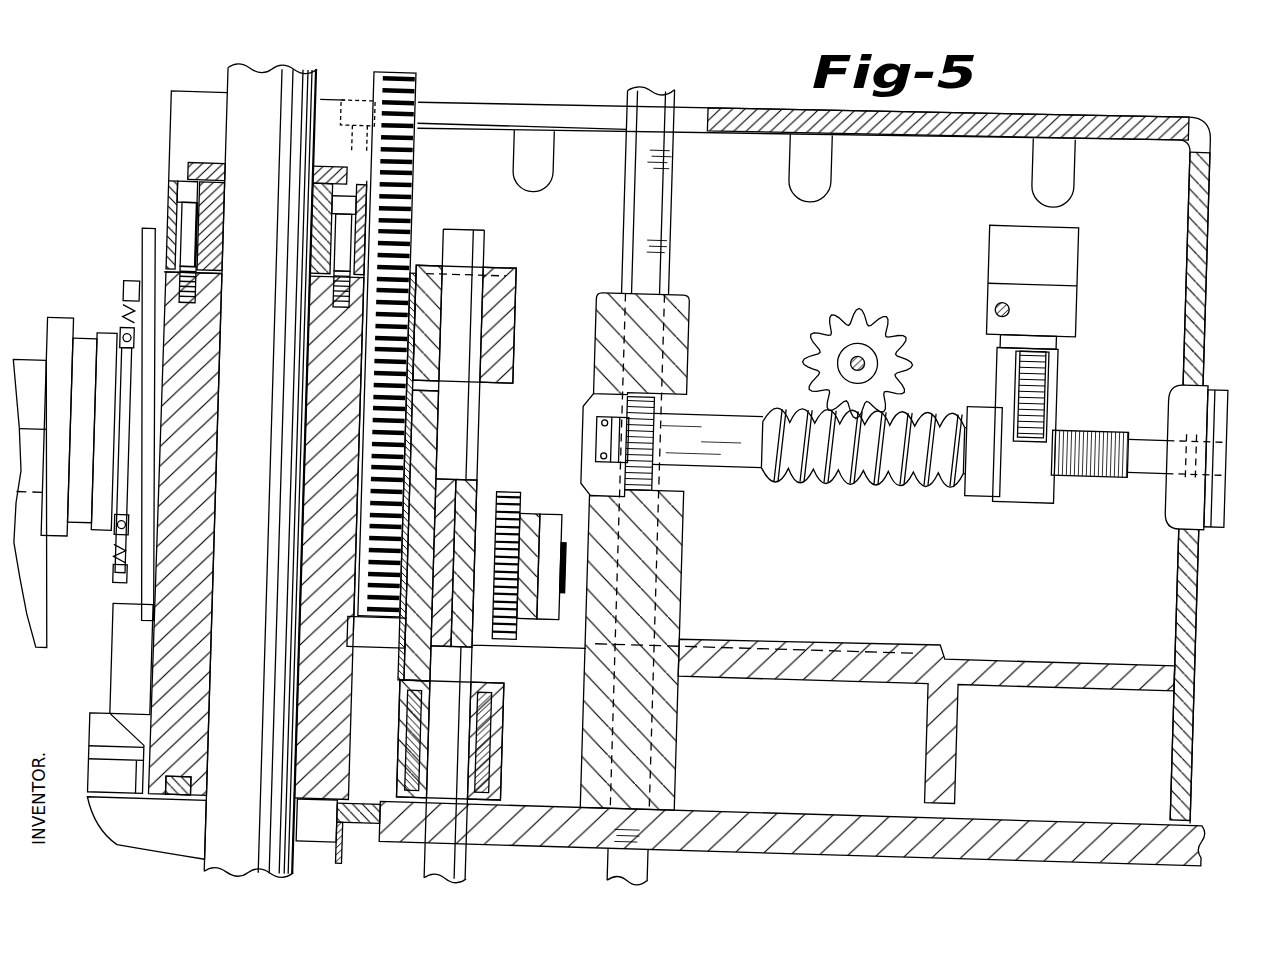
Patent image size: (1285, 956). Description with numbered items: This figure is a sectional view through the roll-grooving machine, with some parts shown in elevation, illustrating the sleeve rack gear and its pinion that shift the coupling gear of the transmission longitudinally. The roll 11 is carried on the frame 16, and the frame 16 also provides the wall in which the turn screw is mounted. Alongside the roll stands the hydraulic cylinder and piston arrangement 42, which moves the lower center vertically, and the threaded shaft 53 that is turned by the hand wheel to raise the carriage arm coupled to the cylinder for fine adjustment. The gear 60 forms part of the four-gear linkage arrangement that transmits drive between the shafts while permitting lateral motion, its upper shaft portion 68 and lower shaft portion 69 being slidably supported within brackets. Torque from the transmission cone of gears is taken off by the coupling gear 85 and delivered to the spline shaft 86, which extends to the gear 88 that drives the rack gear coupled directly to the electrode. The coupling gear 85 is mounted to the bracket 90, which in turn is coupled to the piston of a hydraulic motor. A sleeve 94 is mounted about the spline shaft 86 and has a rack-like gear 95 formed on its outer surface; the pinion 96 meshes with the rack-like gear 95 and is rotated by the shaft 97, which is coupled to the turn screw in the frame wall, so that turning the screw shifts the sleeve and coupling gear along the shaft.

The roll 11 is at (53, 360).
The frame 16 is at (1204, 180).
The hydraulic cylinder and piston arrangement 42 is at (248, 410).
The threaded shaft 53 is at (411, 187).
The gear 60 is at (514, 517).
The upper shaft portion 68 is at (460, 335).
The lower shaft portion 69 is at (462, 704).
The coupling gear 85 is at (1035, 380).
The spline shaft 86 is at (1091, 455).
The gear 88 is at (650, 467).
The bracket 90 is at (1047, 279).
The sleeve 94 is at (927, 482).
The rack-like gear 95 is at (889, 483).
The pinion 96 is at (893, 330).
The shaft 97 is at (830, 357).